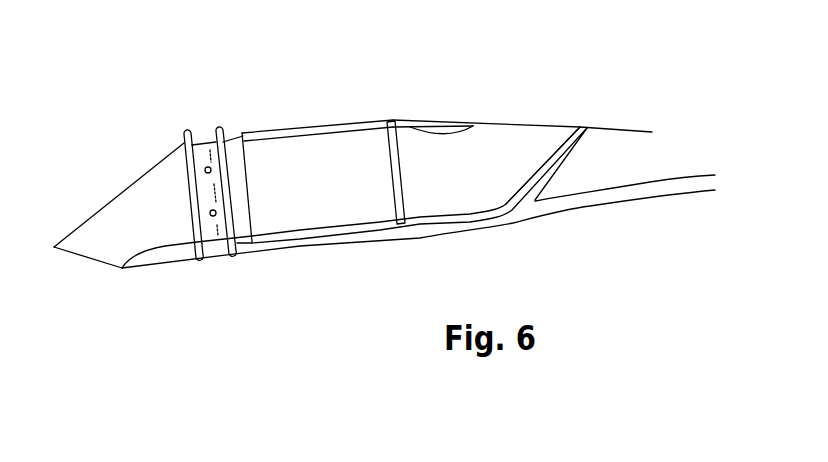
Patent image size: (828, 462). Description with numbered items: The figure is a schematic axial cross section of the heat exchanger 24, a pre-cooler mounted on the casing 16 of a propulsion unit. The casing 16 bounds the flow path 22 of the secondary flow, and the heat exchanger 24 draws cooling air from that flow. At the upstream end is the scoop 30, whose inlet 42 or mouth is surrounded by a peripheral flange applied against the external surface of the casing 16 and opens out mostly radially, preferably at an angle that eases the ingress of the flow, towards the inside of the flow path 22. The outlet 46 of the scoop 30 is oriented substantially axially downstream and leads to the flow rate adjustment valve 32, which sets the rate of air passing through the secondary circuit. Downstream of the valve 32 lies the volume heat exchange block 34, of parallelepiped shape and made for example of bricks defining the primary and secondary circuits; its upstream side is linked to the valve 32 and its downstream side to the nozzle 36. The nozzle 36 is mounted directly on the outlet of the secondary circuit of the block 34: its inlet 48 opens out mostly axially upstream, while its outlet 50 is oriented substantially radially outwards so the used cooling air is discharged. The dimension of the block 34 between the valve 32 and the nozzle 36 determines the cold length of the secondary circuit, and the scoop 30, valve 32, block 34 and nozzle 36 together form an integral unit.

The casing 16 is at (670, 193).
The flow path of the secondary flow 22 is at (418, 217).
The heat exchanger 24 is at (322, 119).
The scoop 30 is at (105, 205).
The flow rate adjustment valve 32 is at (202, 141).
The heat exchange block 34 is at (287, 130).
The nozzle 36 is at (447, 118).
The inlet 42 is at (75, 253).
The outlet 46 is at (183, 168).
The inlet 48 is at (401, 158).
The outlet 50 is at (543, 124).